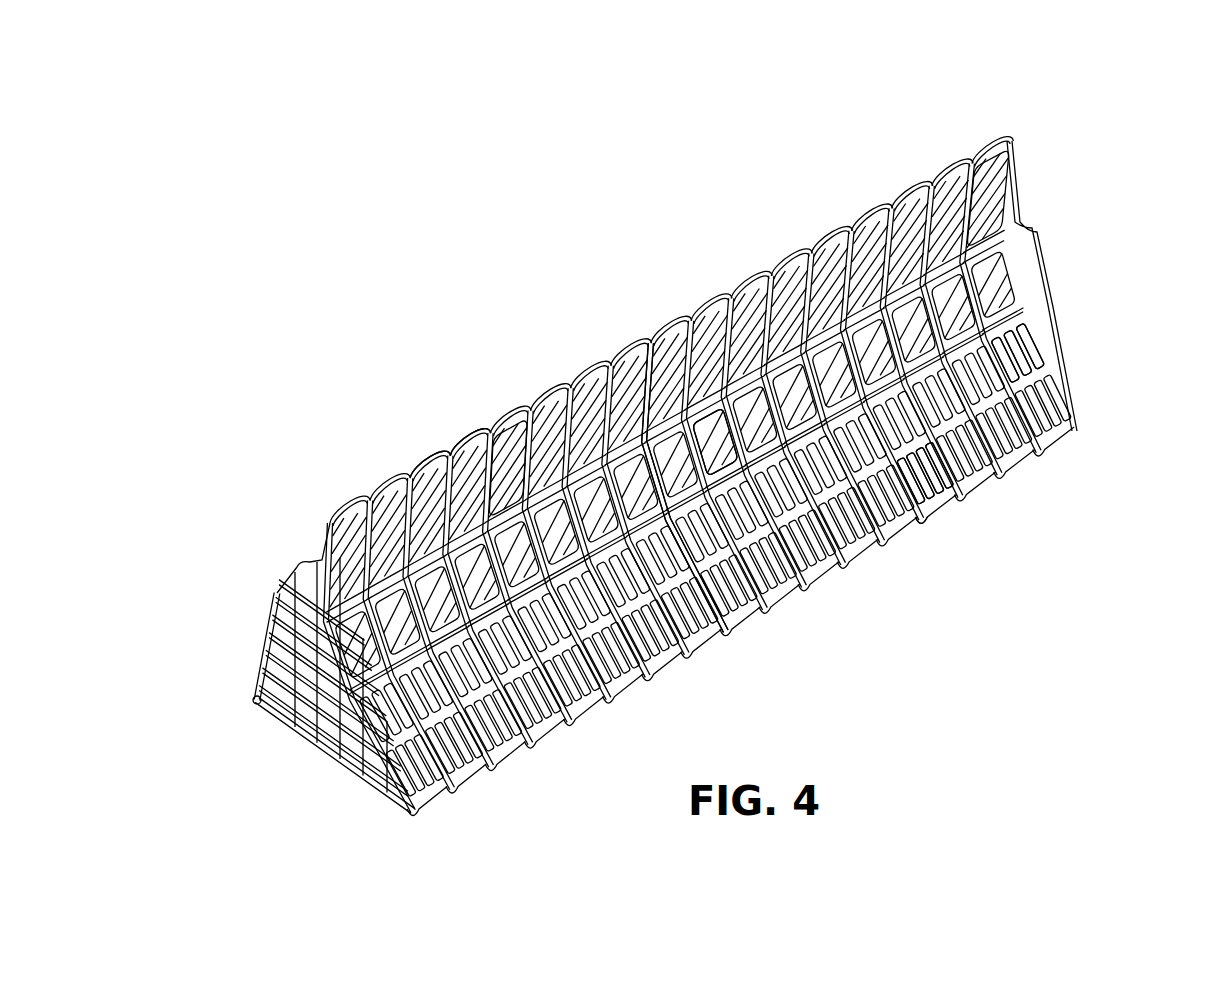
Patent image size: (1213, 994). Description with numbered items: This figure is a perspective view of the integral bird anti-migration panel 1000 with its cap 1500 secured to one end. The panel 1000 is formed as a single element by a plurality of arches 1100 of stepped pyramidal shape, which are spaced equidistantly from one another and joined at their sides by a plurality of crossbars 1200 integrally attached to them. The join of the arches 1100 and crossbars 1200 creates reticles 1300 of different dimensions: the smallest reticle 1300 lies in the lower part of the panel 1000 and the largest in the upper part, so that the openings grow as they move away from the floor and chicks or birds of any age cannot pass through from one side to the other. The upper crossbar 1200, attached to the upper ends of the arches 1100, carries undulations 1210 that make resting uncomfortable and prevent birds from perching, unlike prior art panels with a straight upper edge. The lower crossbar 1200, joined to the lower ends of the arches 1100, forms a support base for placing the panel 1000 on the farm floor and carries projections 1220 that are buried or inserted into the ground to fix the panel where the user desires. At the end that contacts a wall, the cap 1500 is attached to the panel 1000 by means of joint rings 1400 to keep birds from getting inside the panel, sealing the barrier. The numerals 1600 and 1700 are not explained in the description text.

The integral anti-migration panel 1000 is at (692, 295).
The arch 1100 is at (297, 567).
The crossbar 1200 is at (512, 408).
The undulation 1210 is at (630, 348).
The projection 1220 is at (923, 520).
The reticle 1300 is at (1035, 344).
The joint ring 1400 is at (275, 598).
The cap 1500 is at (288, 662).
The first sidewall 1600 is at (419, 370).
The second sidewall 1700 is at (487, 359).